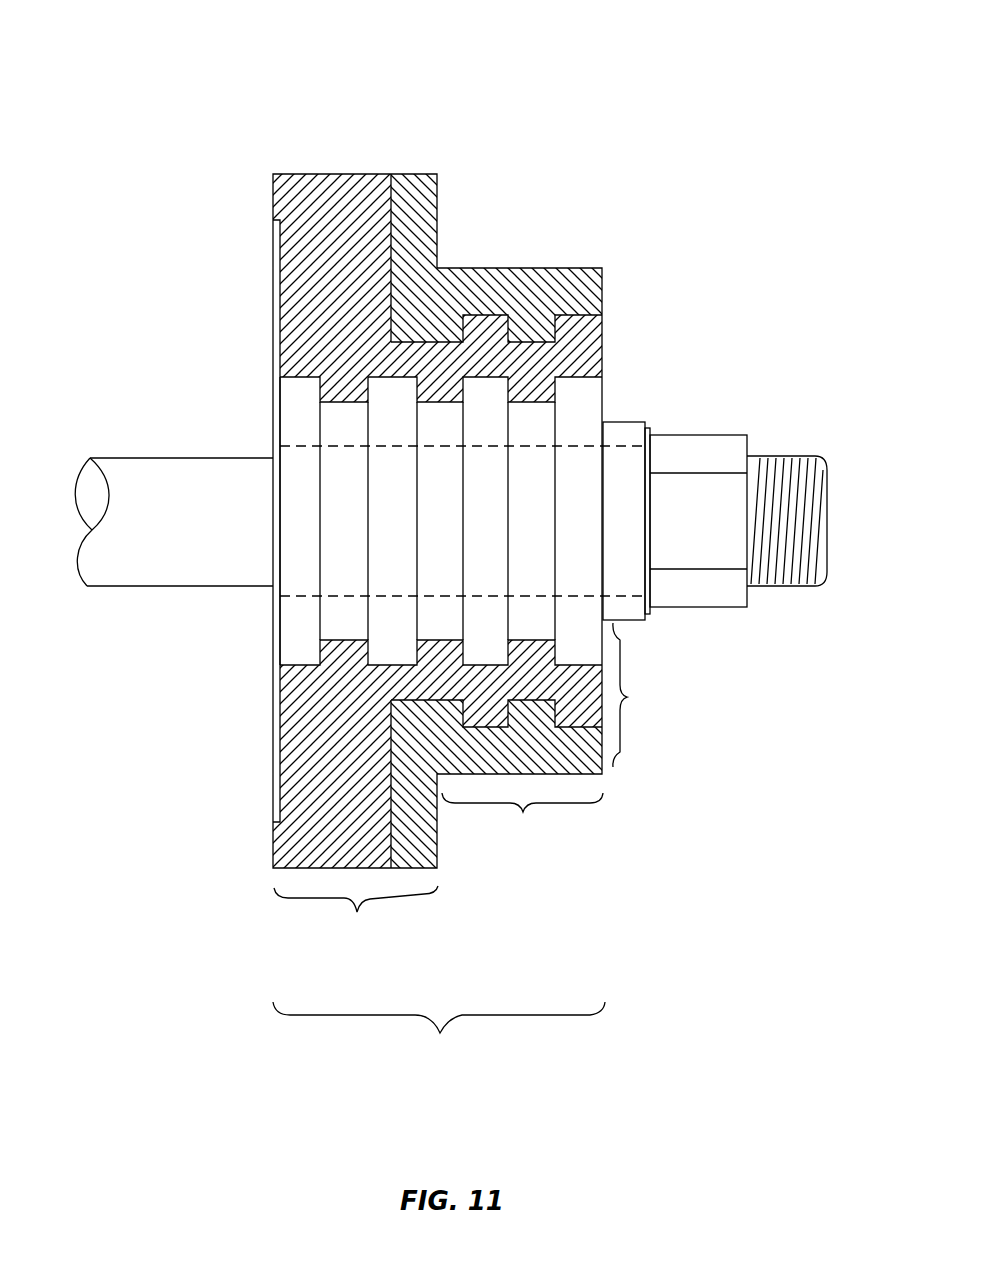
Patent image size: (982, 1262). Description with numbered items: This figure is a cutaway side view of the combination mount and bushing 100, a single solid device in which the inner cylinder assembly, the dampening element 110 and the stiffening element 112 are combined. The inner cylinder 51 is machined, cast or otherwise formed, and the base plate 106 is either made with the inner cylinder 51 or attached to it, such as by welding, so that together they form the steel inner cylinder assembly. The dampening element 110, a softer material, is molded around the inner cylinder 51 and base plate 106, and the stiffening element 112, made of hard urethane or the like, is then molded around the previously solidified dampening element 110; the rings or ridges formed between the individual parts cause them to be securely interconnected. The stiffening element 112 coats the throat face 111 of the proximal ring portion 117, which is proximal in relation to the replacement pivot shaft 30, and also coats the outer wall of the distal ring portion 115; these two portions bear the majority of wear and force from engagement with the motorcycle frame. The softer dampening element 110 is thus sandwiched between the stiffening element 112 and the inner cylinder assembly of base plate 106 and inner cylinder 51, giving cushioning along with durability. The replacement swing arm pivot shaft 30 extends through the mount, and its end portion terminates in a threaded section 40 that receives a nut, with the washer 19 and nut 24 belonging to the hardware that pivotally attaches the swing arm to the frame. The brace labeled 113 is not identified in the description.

The combination mount and bushing 100 is at (440, 1033).
The base plate 106 is at (272, 312).
The dampening element 110 is at (332, 174).
The throat face 111 is at (440, 207).
The stiffening element 112 is at (540, 268).
The seal portion 113 is at (627, 697).
The distal ring portion 115 is at (523, 812).
The proximal ring portion 117 is at (357, 912).
The washer 19 is at (648, 420).
The nut 24 is at (697, 607).
The replacement swing arm pivot shaft 30 is at (223, 563).
The threaded section 40 is at (783, 455).
The inner cylinder 51 is at (302, 507).